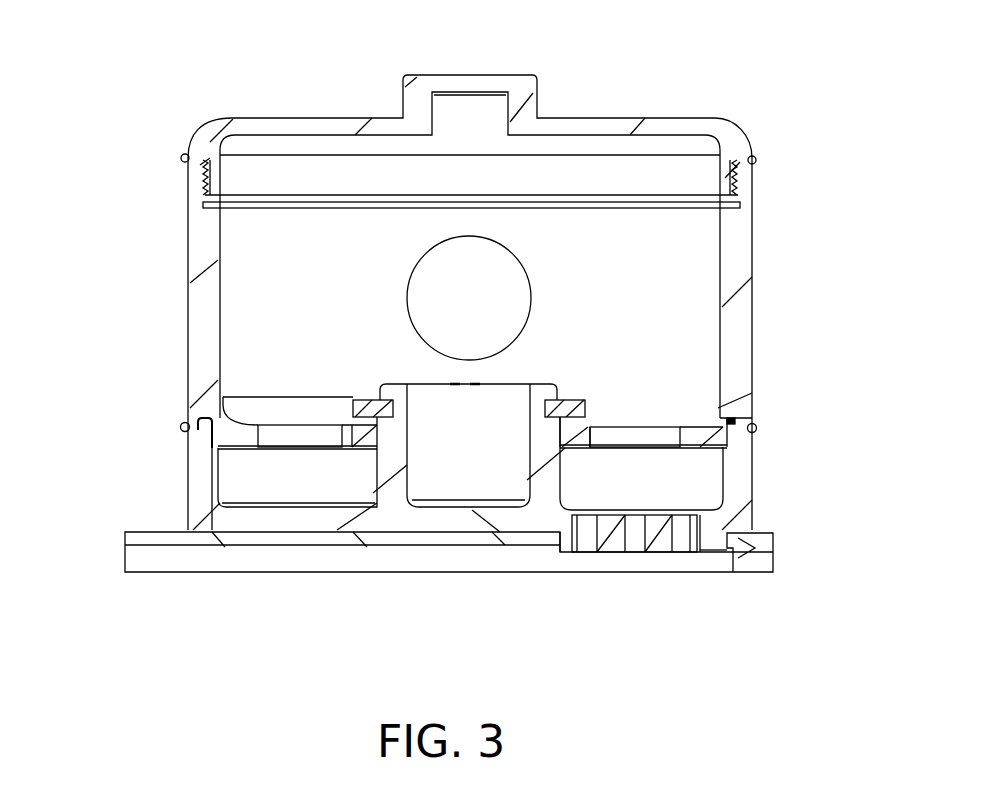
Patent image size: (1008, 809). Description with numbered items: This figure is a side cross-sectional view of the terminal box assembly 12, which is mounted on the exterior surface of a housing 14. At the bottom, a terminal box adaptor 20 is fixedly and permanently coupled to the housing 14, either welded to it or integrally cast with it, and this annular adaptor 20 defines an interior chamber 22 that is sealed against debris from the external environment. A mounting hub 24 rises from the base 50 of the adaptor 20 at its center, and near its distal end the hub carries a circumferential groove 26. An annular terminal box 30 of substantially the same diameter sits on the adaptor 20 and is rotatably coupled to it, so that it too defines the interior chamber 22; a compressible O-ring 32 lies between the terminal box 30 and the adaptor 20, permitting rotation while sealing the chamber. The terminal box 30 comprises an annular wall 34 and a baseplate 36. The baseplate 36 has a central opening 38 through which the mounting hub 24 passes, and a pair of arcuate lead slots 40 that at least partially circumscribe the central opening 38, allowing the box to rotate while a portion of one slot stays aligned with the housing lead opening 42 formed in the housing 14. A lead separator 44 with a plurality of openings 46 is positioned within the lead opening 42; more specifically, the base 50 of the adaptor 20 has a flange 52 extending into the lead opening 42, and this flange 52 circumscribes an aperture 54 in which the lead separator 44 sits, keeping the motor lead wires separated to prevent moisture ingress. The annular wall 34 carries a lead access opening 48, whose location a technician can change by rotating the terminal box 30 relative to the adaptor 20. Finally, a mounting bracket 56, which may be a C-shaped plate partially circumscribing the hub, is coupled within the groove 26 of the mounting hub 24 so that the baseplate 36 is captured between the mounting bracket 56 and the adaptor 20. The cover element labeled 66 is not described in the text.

The terminal box assembly 12 is at (130, 85).
The housing 14 is at (125, 542).
The terminal box adaptor 20 is at (195, 480).
The interior chamber 22 is at (258, 484).
The mounting hub 24 is at (385, 463).
The circumferential groove 26 is at (558, 405).
The terminal box 30 is at (767, 268).
The O-ring 32 is at (757, 428).
The annular wall 34 is at (737, 312).
The baseplate 36 is at (250, 436).
The central opening 38 is at (587, 432).
The lead slots 40 is at (290, 437).
The housing lead opening 42 is at (545, 541).
The lead separator 44 is at (710, 533).
The openings 46 is at (648, 510).
The lead access opening 48 is at (428, 293).
The base 50 is at (282, 518).
The flange 52 is at (560, 532).
The aperture 54 is at (740, 530).
The mounting bracket 56 is at (373, 407).
The lid 66 is at (697, 130).